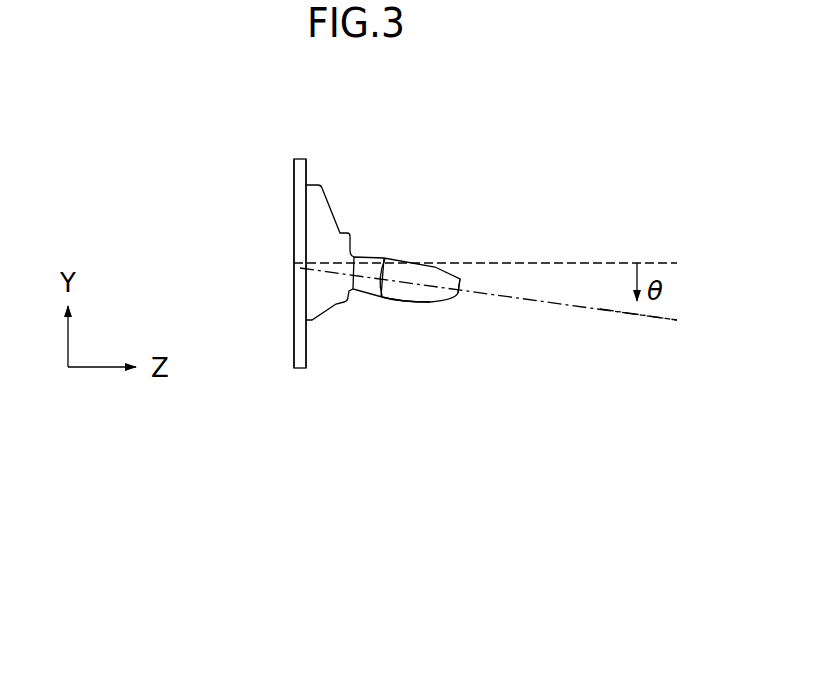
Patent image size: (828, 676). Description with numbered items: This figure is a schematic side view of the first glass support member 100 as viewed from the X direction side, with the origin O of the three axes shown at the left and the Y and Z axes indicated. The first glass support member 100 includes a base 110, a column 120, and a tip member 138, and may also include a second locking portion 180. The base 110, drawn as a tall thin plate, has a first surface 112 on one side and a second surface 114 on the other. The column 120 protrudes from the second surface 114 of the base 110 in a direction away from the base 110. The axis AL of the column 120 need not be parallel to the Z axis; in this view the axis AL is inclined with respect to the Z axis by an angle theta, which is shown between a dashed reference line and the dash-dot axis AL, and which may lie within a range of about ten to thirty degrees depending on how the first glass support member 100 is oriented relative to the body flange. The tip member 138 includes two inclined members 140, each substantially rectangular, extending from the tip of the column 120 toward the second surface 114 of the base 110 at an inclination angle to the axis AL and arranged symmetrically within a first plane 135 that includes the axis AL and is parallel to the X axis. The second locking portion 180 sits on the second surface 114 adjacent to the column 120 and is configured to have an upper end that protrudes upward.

The first glass support member 100 is at (509, 124).
The base 110 is at (299, 369).
The first surface 112 is at (283, 356).
The second surface 114 is at (317, 356).
The column 120 is at (443, 270).
The first plane 135 is at (658, 322).
The tip member 138 is at (470, 268).
The inclined member 140 is at (410, 303).
The second locking portion 180 is at (341, 236).
The origin O is at (284, 152).
The axis AL is at (563, 309).